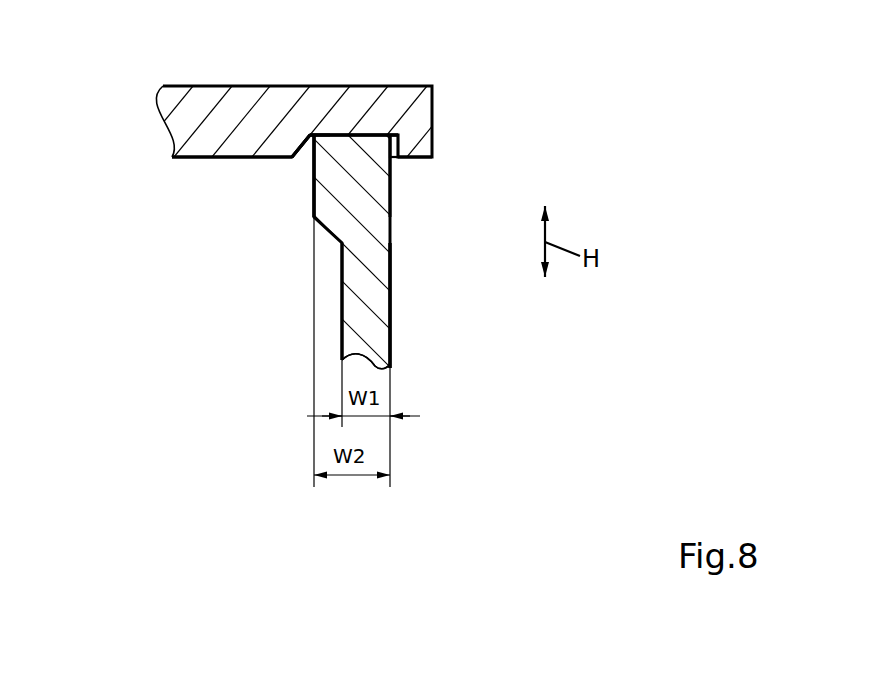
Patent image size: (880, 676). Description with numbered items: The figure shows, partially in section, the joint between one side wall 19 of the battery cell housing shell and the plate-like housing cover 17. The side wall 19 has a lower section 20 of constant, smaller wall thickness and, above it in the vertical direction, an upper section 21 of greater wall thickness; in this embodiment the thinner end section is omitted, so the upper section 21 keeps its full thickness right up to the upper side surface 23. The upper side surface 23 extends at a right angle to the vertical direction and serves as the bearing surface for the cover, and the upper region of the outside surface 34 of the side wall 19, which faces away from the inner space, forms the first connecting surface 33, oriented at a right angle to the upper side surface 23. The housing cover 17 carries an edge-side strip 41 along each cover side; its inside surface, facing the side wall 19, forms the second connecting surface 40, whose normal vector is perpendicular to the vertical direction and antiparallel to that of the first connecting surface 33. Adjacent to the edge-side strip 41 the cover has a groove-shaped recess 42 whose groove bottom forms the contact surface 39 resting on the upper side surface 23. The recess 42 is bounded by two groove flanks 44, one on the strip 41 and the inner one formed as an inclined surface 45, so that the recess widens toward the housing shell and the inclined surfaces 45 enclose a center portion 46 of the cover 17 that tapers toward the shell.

The housing cover 17 is at (186, 112).
The center portion 46 is at (193, 154).
The groove flank 44 is at (300, 143).
The inclined surface 45 is at (301, 146).
The groove-shaped recess 42 is at (310, 136).
The upper side surface 23 is at (393, 133).
The first connecting surface 33 is at (399, 138).
The edge-side strip 41 is at (432, 157).
The upper section 21 is at (402, 242).
The contact surface 39 is at (316, 136).
The second connecting surface 40 is at (392, 157).
The outside surface 34 is at (391, 297).
The lower section 20 is at (398, 320).
The side wall 19 is at (373, 328).